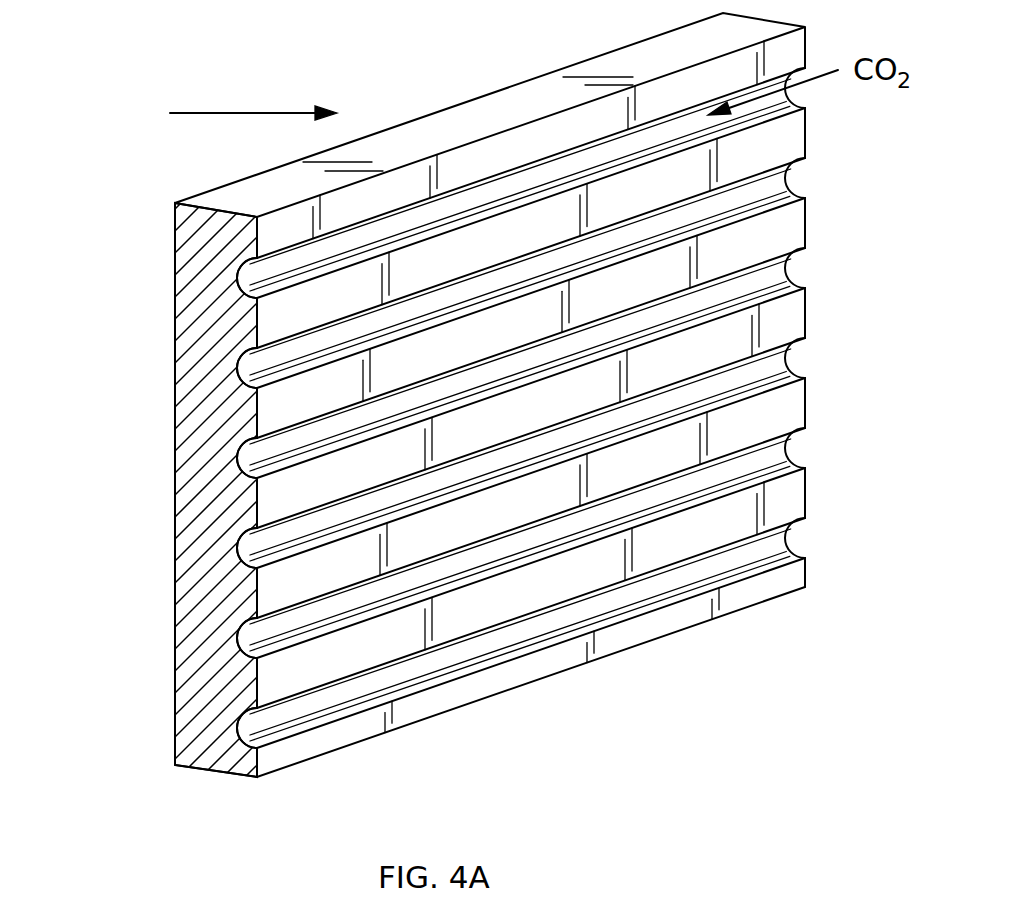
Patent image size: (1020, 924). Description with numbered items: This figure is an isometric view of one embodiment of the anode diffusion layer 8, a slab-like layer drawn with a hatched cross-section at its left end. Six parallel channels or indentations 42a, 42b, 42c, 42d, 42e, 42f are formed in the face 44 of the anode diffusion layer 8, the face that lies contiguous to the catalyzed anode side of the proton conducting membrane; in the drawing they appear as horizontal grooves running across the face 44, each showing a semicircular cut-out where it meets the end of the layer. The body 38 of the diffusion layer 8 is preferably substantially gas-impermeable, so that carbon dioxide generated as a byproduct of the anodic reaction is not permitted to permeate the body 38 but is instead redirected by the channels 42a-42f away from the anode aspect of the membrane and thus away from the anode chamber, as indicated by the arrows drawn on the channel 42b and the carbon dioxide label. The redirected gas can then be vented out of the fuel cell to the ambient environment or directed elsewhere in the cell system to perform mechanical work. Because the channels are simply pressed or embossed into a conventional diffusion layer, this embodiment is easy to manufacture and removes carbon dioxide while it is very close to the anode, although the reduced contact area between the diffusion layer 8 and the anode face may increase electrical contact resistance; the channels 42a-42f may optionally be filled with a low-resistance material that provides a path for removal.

The anode diffusion layer 8 is at (725, 658).
The body 38 is at (190, 214).
The channel 42a is at (257, 259).
The channel 42b is at (257, 349).
The channel 42c is at (257, 439).
The channel 42d is at (257, 529).
The channel 42e is at (257, 619).
The channel 42f is at (257, 709).
The face 44 is at (801, 212).